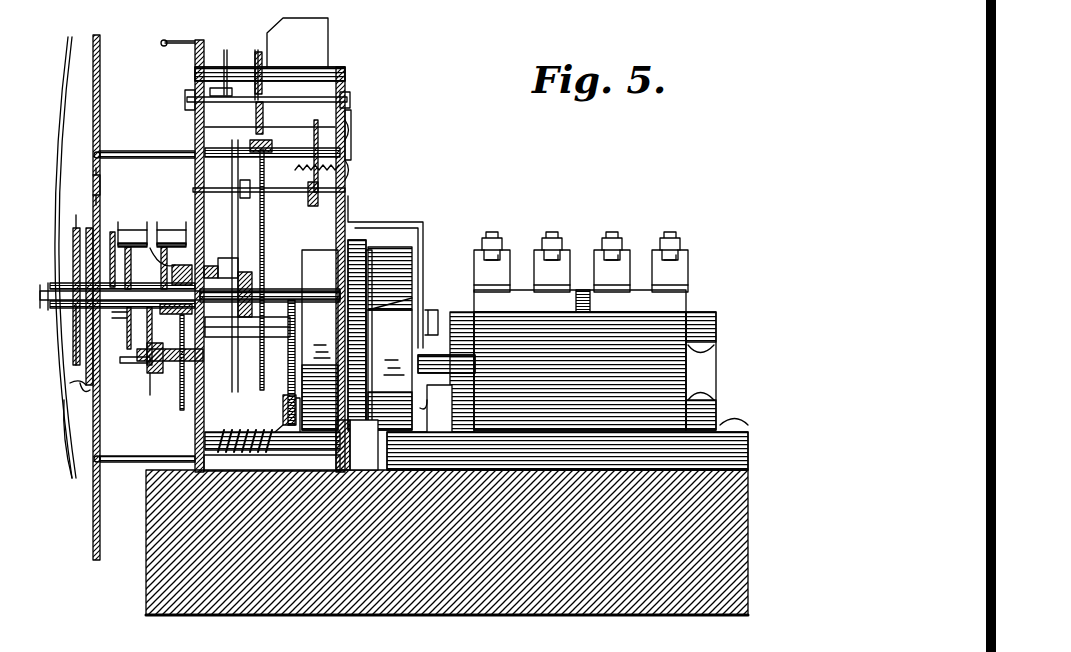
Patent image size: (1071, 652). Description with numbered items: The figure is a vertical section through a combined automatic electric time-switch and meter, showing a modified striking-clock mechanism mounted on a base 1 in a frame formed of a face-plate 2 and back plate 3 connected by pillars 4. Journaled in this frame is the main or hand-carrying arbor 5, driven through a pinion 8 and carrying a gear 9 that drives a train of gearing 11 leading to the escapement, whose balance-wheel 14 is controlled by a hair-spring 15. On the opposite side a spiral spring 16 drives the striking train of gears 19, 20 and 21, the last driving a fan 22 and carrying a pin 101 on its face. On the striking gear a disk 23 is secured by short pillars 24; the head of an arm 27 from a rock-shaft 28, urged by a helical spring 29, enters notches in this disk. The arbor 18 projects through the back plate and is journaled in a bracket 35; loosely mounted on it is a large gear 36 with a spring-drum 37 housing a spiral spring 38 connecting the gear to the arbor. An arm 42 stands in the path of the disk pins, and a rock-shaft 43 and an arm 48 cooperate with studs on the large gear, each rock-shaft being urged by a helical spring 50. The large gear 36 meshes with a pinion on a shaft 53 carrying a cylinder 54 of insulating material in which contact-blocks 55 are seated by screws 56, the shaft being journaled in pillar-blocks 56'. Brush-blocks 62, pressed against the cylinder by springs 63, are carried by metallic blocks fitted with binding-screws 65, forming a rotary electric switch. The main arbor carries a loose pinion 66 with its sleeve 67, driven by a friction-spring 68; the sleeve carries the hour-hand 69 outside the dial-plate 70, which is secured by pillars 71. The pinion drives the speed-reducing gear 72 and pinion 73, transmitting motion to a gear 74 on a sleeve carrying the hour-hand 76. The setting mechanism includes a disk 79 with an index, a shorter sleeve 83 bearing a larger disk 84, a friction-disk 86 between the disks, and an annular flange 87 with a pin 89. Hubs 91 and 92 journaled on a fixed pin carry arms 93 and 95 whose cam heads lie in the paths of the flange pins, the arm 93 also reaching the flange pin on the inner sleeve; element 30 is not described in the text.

The base 1 is at (748, 522).
The face-plate 2 is at (195, 112).
The back plate 3 is at (345, 113).
The pillars 4 is at (345, 74).
The main or hand-carrying arbor 5 is at (226, 290).
The pinion 8 is at (247, 336).
The gear 9 is at (240, 258).
The train of gearing 11 is at (352, 136).
The balance-wheel 14 is at (262, 60).
The hair-spring 15 is at (228, 46).
The spiral spring 16 is at (320, 340).
The arbor 18 is at (435, 313).
The gear 19 is at (260, 218).
The gear 20 is at (263, 113).
The gear 21 is at (252, 48).
The fan 22 is at (297, 42).
The disk 23 is at (288, 390).
The short pillars 24 is at (296, 398).
The arm 27 is at (288, 211).
The rock-shaft 28 is at (280, 168).
The helical spring 29 is at (345, 165).
The bar 30 is at (240, 186).
The bracket 35 is at (402, 222).
The large gear 36 is at (356, 240).
The spring-drum 37 is at (382, 331).
The spiral spring 38 is at (412, 258).
The arm 42 is at (288, 370).
The rock-shaft 43 is at (282, 452).
The arm 48 is at (372, 353).
The helical spring 50 is at (256, 418).
The shaft 53 is at (446, 372).
The cylinder of insulating material 54 is at (716, 332).
The contact-blocks 55 is at (580, 301).
The screws 56 is at (717, 371).
The pillar-blocks 56' is at (542, 427).
The brush-blocks 62 is at (581, 271).
The springs 63 is at (504, 250).
The binding-screw 65 is at (492, 238).
The pinion 66 is at (172, 314).
The sleeve 67 is at (48, 306).
The friction-spring 68 is at (208, 266).
The hour-hand 69 is at (55, 125).
The dial-plate 70 is at (100, 83).
The pillars 71 is at (132, 151).
The speed-reducing gear 72 is at (180, 399).
The pinion 73 is at (150, 390).
The gear 74 is at (137, 356).
The hour-hand 76 is at (66, 422).
The disk 79 is at (76, 227).
The sleeve 83 is at (113, 275).
The disk 84 is at (93, 186).
The friction-disk 86 is at (86, 338).
The annular flange 87 is at (147, 347).
The pin 89 is at (127, 330).
The hub 91 is at (171, 259).
The hub 92 is at (132, 259).
The arm 93 is at (159, 229).
The arm 95 is at (120, 229).
The pin 101 is at (216, 88).